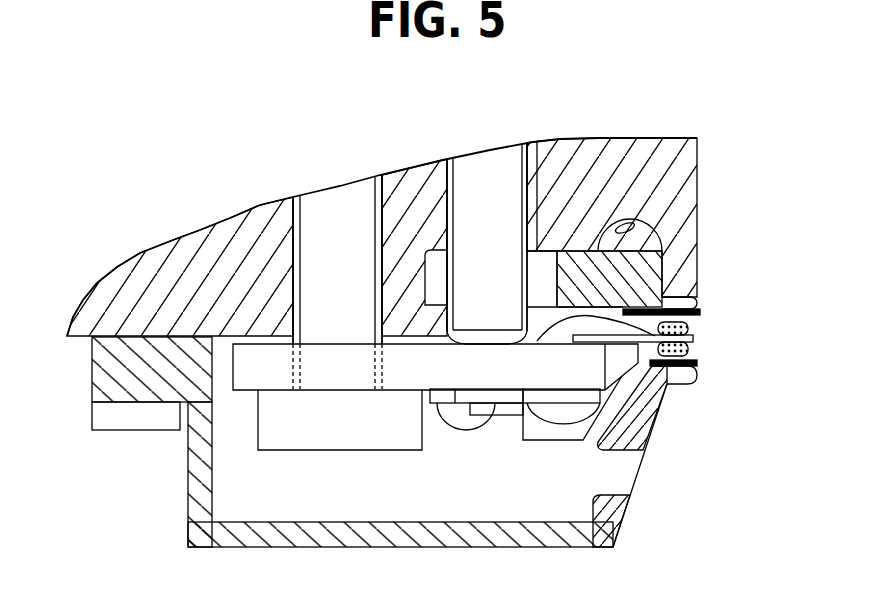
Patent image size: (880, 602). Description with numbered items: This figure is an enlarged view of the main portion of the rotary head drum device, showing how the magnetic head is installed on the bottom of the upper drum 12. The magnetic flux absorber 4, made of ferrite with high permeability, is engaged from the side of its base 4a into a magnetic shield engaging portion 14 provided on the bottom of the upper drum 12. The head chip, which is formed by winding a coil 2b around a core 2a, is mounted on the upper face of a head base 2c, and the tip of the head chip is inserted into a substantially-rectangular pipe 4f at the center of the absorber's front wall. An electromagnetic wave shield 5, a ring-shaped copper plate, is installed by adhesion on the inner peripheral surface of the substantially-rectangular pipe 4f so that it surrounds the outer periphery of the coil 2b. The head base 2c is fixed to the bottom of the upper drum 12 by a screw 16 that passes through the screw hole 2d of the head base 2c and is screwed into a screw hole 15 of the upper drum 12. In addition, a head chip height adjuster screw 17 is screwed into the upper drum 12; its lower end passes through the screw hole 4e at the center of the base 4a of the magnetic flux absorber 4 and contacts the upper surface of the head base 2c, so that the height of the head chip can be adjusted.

The upper drum 12 is at (695, 139).
The magnetic shield engaging portion 14 is at (677, 200).
The screw hole 15 is at (290, 222).
The screw 16 is at (342, 208).
The head chip height adjuster screw 17 is at (490, 178).
The magnetic flux absorber 4 is at (663, 230).
The base 4a is at (636, 241).
The screw hole 4e is at (548, 265).
The substantially-rectangular pipe 4f is at (693, 275).
The electromagnetic wave shield 5 is at (697, 312).
The core 2a is at (694, 340).
The coil 2b is at (693, 328).
The head base 2c is at (562, 355).
The screw hole 2d is at (257, 395).